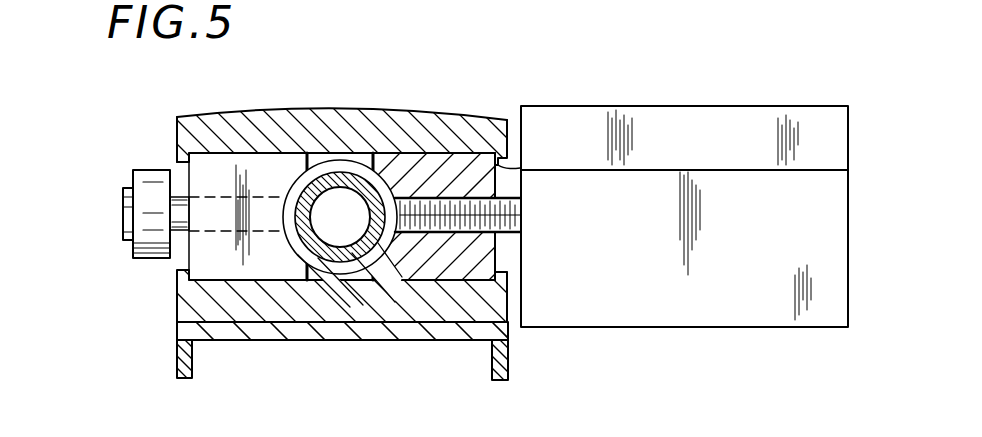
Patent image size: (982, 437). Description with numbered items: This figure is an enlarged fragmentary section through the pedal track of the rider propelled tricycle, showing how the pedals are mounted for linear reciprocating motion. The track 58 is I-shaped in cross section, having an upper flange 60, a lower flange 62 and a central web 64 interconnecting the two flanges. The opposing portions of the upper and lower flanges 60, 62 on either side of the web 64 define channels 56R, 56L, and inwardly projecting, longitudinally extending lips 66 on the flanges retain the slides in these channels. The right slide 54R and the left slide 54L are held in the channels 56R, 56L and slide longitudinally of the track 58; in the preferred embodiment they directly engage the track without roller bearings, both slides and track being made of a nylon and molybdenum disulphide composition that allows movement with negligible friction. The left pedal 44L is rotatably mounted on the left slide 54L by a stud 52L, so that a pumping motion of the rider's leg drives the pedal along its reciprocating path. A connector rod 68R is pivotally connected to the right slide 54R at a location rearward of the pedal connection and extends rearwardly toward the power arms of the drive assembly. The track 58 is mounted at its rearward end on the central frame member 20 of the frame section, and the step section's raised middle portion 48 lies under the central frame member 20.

The central frame member 20 is at (348, 262).
The left pedal 44L is at (660, 106).
The raised middle portion 48 is at (270, 342).
The left stud 52L is at (520, 214).
The right slide 54R is at (213, 170).
The left slide 54L is at (455, 162).
The right channel 56R is at (262, 155).
The left channel 56L is at (420, 273).
The track 58 is at (407, 112).
The upper flange 60 is at (343, 108).
The lower flange 62 is at (313, 335).
The central web 64 is at (292, 248).
The lips 66 is at (177, 160).
The right connector rod 68R is at (143, 222).